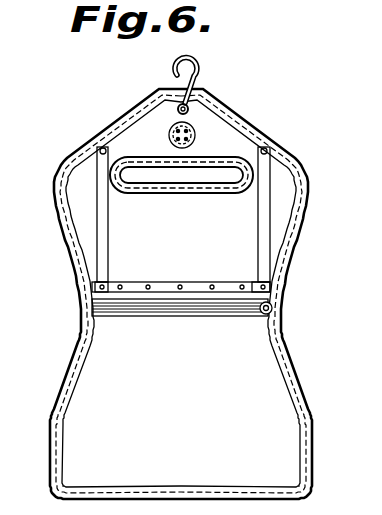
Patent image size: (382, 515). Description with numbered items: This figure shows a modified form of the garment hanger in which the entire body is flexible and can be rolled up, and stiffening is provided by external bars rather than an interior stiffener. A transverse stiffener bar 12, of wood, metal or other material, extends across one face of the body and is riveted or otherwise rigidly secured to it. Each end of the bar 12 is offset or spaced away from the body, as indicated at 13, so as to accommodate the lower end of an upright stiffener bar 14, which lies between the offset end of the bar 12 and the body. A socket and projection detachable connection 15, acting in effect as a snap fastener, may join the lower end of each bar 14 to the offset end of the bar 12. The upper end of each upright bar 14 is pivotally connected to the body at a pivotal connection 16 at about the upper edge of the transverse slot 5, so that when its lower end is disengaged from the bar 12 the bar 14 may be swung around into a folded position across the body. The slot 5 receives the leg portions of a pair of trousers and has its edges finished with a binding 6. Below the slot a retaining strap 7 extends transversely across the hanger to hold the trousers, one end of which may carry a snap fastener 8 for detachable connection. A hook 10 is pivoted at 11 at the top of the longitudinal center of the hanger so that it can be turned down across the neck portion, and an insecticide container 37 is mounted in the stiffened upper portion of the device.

The transverse slot 5 is at (191, 181).
The binding 6 is at (183, 159).
The retaining strap 7 is at (189, 317).
The snap fastener 8 is at (272, 312).
The hook 10 is at (200, 68).
The pivot 11 is at (190, 106).
The transverse stiffener bar 12 is at (162, 290).
The offset end of stiffener bar 13 is at (97, 279).
The upright stiffener bar 14 is at (103, 250).
The socket and projection detachable connection 15 is at (95, 288).
The pivotal connection 16 is at (102, 146).
The insecticide container 37 is at (170, 129).